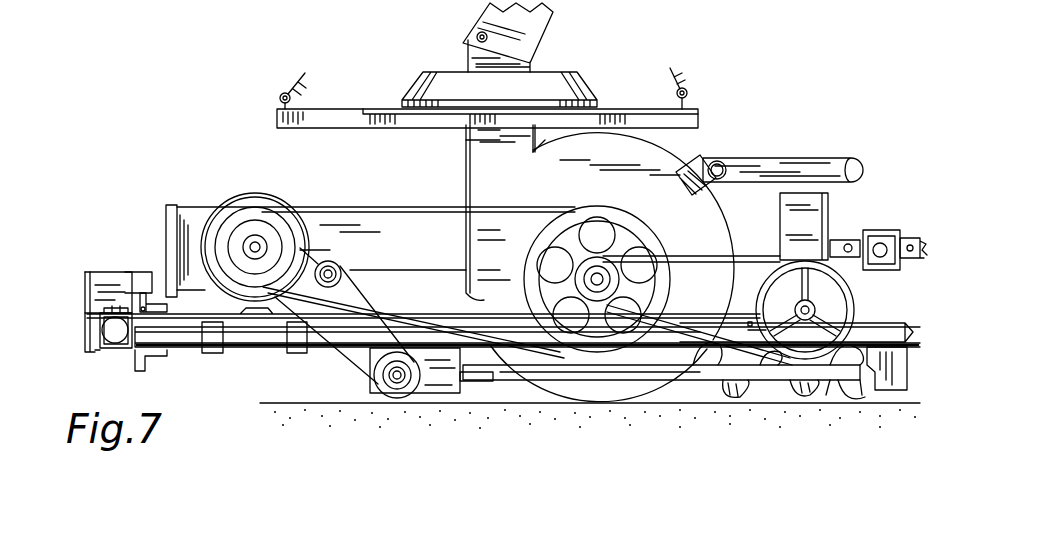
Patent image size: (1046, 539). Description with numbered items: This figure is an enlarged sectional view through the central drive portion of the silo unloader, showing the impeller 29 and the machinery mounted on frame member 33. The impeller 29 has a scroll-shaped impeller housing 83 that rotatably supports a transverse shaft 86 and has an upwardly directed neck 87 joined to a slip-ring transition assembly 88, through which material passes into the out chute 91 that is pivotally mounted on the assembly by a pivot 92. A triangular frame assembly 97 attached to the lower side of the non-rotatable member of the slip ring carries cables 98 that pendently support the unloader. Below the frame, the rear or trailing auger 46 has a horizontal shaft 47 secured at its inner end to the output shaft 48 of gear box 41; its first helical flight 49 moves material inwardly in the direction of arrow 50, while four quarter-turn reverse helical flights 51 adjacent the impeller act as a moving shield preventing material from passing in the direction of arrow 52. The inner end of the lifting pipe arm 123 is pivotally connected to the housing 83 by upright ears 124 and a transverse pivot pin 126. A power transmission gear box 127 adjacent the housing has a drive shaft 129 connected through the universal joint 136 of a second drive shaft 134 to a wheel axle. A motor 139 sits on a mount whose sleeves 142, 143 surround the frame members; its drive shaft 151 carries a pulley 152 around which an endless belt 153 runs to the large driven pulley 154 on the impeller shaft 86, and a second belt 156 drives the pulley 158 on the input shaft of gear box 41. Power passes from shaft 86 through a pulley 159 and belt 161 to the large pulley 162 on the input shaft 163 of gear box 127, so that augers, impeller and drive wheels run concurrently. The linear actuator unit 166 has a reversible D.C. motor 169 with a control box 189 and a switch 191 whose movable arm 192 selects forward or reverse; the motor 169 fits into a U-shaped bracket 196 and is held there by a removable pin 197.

The impeller 29 is at (717, 118).
The frame member 33 is at (900, 323).
The gear box 41 is at (432, 394).
The rear or trailing auger 46 is at (815, 400).
The horizontal shaft 47 is at (860, 392).
The output shaft 48 is at (482, 383).
The first helical flight 49 is at (872, 392).
The arrow 50 is at (785, 405).
The reverse helical flights 51 is at (738, 398).
The arrow 52 is at (702, 385).
The impeller housing 83 is at (478, 236).
The transverse shaft 86 is at (604, 280).
The outlet or neck 87 is at (465, 143).
The transition assembly 88 is at (416, 88).
The out chute 91 is at (473, 15).
The pivot 92 is at (476, 36).
The triangular frame assembly 97 is at (274, 127).
The cable 98 is at (302, 80).
The tubular member or lifting pipe arm 123 is at (815, 158).
The upright ears 124 is at (697, 172).
The transverse pivot pin 126 is at (722, 165).
The power transmission or gear box 127 is at (782, 205).
The drive shaft 129 is at (840, 240).
The second drive shaft 134 is at (918, 238).
The universal joint 136 is at (882, 232).
The motor 139 is at (242, 193).
The sleeves 142 is at (296, 354).
The sleeves 143 is at (214, 354).
The drive shaft 151 is at (265, 243).
The pulley 152 is at (267, 208).
The endless belt 153 is at (376, 233).
The large driven pulley 154 is at (597, 206).
The second belt 156 is at (352, 372).
The pulley 158 is at (393, 396).
The pulley 159 is at (605, 262).
The belt 161 is at (678, 258).
The large pulley 162 is at (772, 272).
The input shaft 163 is at (813, 307).
The extendible and contractible unit 166 is at (82, 358).
The reversible D.C. motor 169 is at (116, 340).
The control box 189 is at (93, 283).
The switch 191 is at (126, 283).
The movable arm 192 is at (143, 292).
The U-shaped bracket 196 is at (136, 360).
The removable pin 197 is at (92, 305).